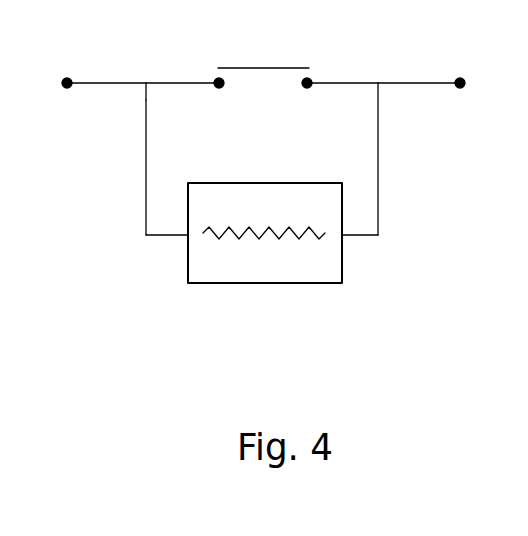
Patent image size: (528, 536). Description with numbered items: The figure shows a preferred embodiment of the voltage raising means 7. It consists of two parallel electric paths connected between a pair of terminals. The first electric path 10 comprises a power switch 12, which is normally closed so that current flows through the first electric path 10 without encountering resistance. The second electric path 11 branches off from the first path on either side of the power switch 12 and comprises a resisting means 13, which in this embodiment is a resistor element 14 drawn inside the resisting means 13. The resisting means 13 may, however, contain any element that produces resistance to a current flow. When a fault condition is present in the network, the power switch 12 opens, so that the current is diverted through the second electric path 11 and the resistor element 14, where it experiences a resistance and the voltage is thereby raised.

The voltage raising means 7 is at (447, 151).
The first electric path 10 is at (168, 82).
The second electric path 11 is at (143, 133).
The power switch 12 is at (268, 67).
The resisting means 13 is at (310, 283).
The resistor element 14 is at (233, 233).